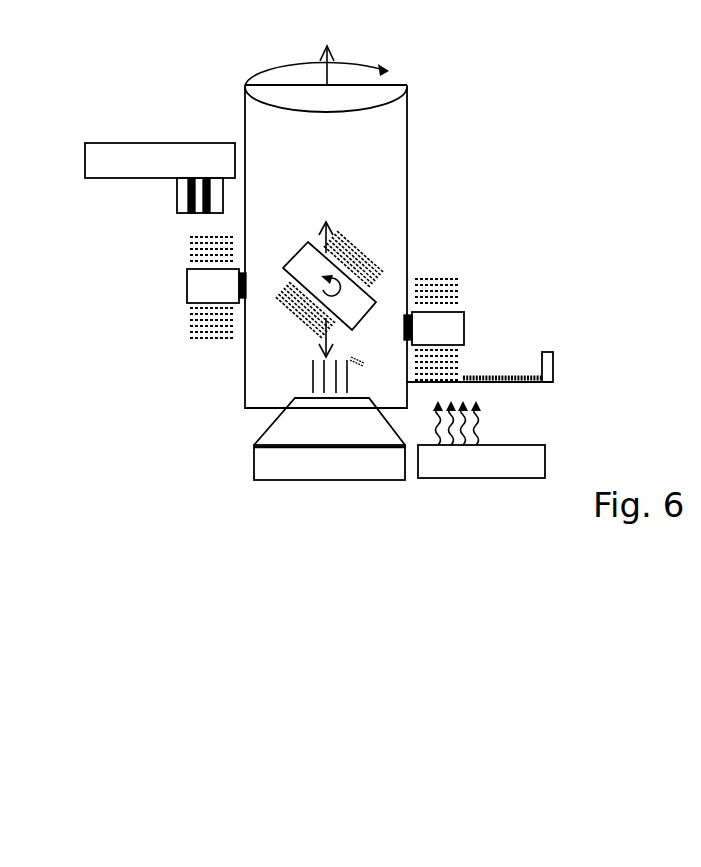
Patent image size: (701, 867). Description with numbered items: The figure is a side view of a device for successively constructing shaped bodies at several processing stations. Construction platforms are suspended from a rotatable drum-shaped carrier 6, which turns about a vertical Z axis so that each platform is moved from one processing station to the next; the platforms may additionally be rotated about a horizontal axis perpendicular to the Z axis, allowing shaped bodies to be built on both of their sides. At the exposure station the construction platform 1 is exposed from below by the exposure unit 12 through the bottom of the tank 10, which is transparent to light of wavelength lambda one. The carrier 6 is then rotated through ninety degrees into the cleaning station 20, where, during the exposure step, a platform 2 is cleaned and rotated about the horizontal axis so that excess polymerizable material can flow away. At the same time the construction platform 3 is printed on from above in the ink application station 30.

The construction platform 1 is at (464, 318).
The platform 2 is at (376, 302).
The construction platform 3 is at (190, 280).
The drum-shaped carrier 6 is at (407, 170).
The tank 10 is at (497, 377).
The exposure unit 12 is at (525, 445).
The cleaning station 20 is at (254, 453).
The ink application station 30 is at (202, 143).